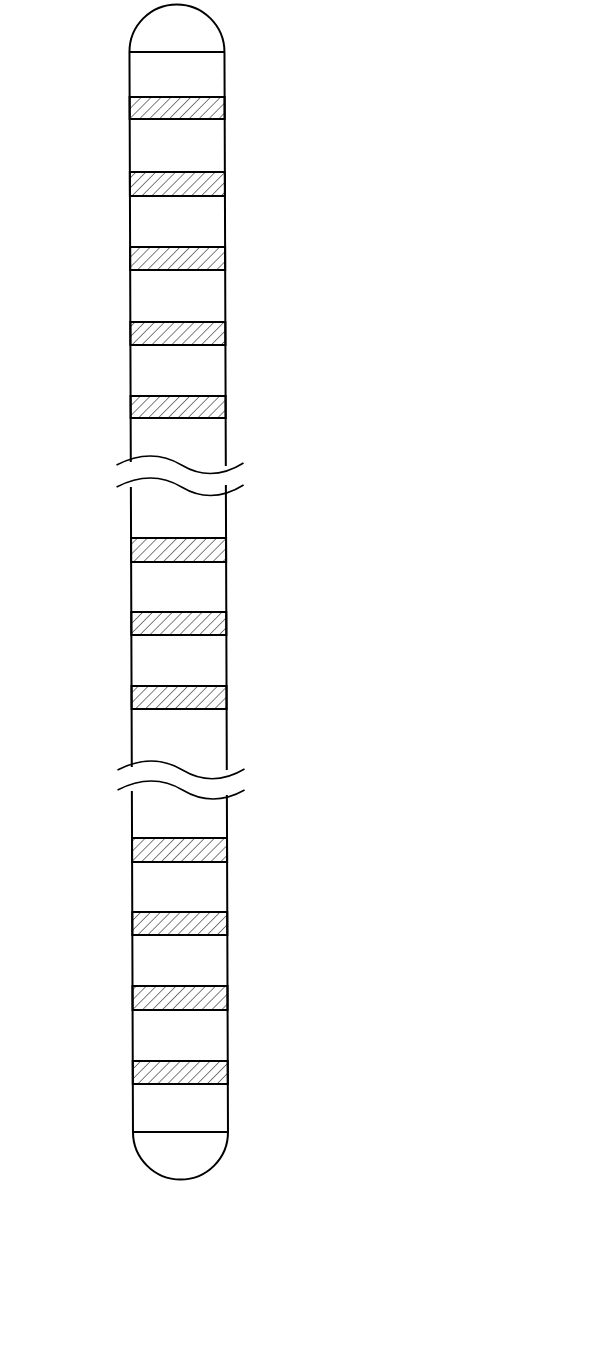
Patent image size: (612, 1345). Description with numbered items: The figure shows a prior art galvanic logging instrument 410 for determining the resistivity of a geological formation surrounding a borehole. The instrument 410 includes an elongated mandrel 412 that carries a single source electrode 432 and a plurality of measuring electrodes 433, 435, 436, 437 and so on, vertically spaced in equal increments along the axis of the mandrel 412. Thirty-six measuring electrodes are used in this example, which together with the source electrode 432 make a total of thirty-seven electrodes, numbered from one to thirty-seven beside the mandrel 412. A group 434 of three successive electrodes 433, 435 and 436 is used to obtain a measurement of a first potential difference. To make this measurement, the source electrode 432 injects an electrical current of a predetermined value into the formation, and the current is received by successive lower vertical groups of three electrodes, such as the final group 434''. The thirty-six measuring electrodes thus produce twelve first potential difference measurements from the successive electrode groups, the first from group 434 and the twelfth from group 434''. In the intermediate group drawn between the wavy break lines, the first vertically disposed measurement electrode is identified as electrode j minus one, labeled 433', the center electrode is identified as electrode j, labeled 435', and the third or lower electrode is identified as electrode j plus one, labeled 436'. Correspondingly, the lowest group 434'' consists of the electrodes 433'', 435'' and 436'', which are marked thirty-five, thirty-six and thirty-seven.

The instrument 410 is at (300, 108).
The mandrel 412 is at (225, 73).
The source electrode 432 is at (140, 97).
The measuring electrode 433 is at (148, 167).
The electrode group 434 is at (307, 405).
The measuring electrode 435 is at (149, 241).
The measuring electrode 436 is at (149, 316).
The measuring electrode 437 is at (140, 396).
The measurement electrode j-1 433' is at (142, 532).
The center electrode j 435' is at (142, 606).
The lower electrode j+1 436' is at (142, 681).
The measurement electrode 433'' is at (143, 906).
The measurement electrode 435'' is at (144, 979).
The measurement electrode 436'' is at (143, 1054).
The electrode group 434'' is at (317, 996).